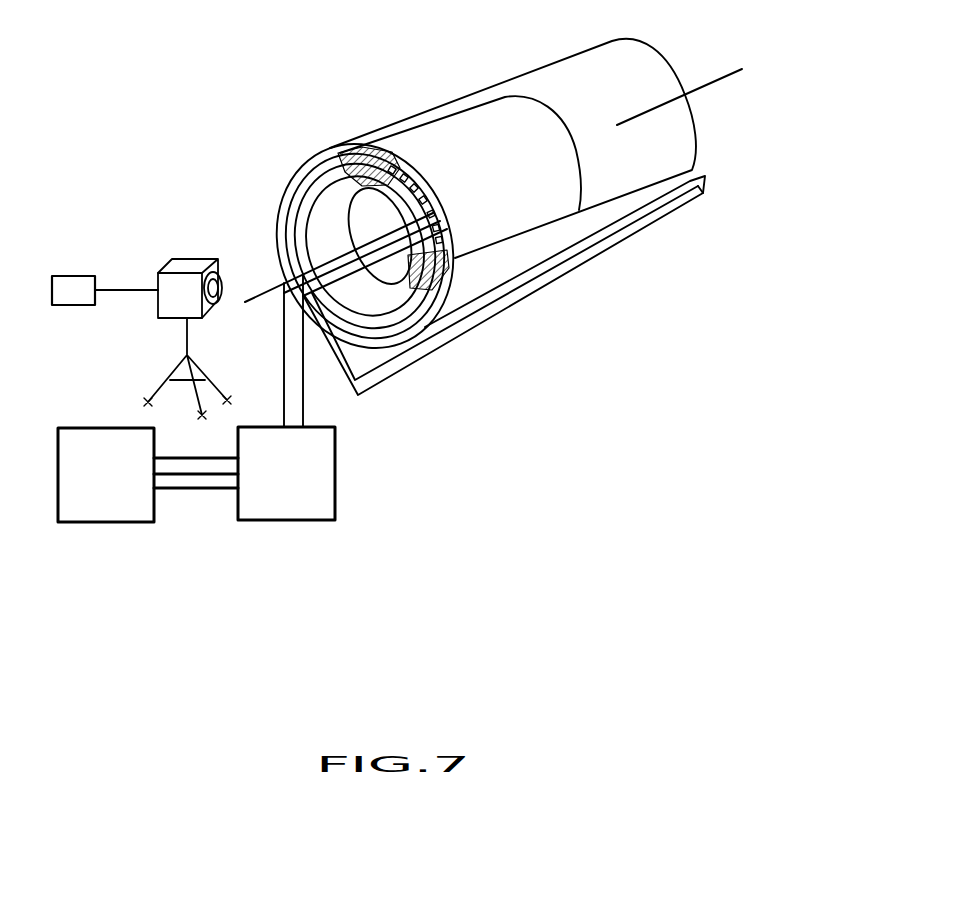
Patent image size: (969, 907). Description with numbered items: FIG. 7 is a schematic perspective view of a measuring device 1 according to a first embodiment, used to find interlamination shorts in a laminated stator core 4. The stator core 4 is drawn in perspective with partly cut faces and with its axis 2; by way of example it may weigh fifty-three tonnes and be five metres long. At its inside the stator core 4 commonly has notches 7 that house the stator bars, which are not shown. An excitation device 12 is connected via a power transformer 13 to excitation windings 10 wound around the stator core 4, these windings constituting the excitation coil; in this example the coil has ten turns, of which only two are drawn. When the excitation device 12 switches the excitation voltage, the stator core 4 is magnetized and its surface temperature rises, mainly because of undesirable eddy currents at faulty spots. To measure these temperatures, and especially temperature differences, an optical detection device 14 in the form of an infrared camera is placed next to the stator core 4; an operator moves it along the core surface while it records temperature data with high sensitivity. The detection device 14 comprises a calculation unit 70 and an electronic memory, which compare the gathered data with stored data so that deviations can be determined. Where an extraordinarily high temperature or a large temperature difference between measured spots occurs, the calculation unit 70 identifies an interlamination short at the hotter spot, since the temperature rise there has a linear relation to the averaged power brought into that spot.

The measuring device 1 is at (203, 97).
The axis 2 is at (714, 82).
The stator core 4 is at (535, 76).
The notches 7 is at (408, 190).
The excitation windings 10 is at (302, 377).
The excitation device 12 is at (105, 452).
The power transformer 13 is at (337, 470).
The optical detection device 14 is at (193, 268).
The calculation unit 70 is at (73, 276).